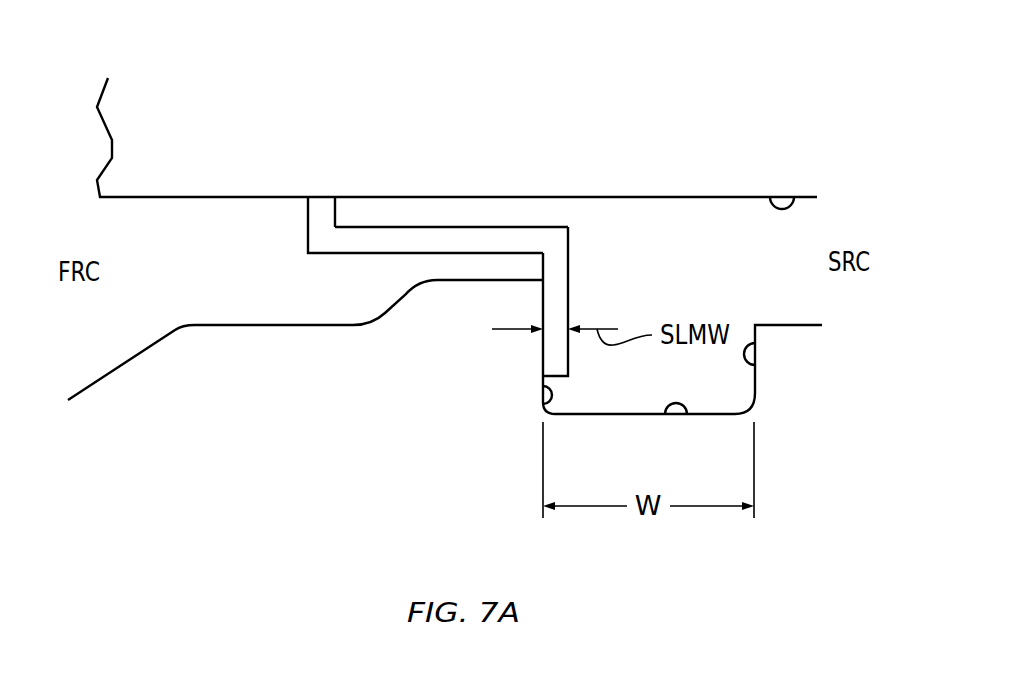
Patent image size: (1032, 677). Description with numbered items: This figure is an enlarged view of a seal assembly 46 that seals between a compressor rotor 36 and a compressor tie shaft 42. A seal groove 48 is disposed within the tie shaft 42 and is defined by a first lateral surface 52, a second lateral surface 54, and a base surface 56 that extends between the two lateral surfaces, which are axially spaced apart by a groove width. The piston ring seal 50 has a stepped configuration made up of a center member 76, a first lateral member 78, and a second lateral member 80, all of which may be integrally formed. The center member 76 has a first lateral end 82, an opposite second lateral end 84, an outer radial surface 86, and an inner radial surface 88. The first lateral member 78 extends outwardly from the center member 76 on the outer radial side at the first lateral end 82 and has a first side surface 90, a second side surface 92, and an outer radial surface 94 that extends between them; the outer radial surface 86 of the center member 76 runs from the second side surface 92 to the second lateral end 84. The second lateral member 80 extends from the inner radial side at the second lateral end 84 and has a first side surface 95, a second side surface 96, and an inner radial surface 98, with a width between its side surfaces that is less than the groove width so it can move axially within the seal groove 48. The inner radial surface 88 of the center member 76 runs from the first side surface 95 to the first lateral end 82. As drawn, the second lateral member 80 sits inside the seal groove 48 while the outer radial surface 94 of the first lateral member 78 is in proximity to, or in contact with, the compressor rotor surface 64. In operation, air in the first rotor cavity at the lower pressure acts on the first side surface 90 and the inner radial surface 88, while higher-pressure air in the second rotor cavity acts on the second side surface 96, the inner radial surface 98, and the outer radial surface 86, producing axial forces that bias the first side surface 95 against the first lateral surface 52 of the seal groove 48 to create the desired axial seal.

The compressor rotor 36 is at (473, 65).
The tie shaft 42 is at (164, 405).
The seal assembly 46 is at (362, 416).
The seal groove 48 is at (768, 396).
The piston ring seal 50 is at (470, 212).
The first lateral surface 52 is at (543, 403).
The second lateral surface 54 is at (748, 362).
The base surface 56 is at (686, 418).
The compressor rotor surface 64 is at (795, 206).
The center member 76 is at (412, 243).
The first lateral member 78 is at (326, 208).
The second lateral member 80 is at (547, 300).
The first lateral end 82 is at (276, 241).
The second lateral end 84 is at (597, 257).
The outer radial surface 86 is at (520, 224).
The inner radial surface 88 is at (335, 253).
The first side surface 90 is at (308, 214).
The second side surface 92 is at (337, 208).
The outer radial surface 94 is at (318, 197).
The first side surface 95 is at (541, 268).
The second side surface 96 is at (570, 293).
The inner radial surface 98 is at (563, 377).